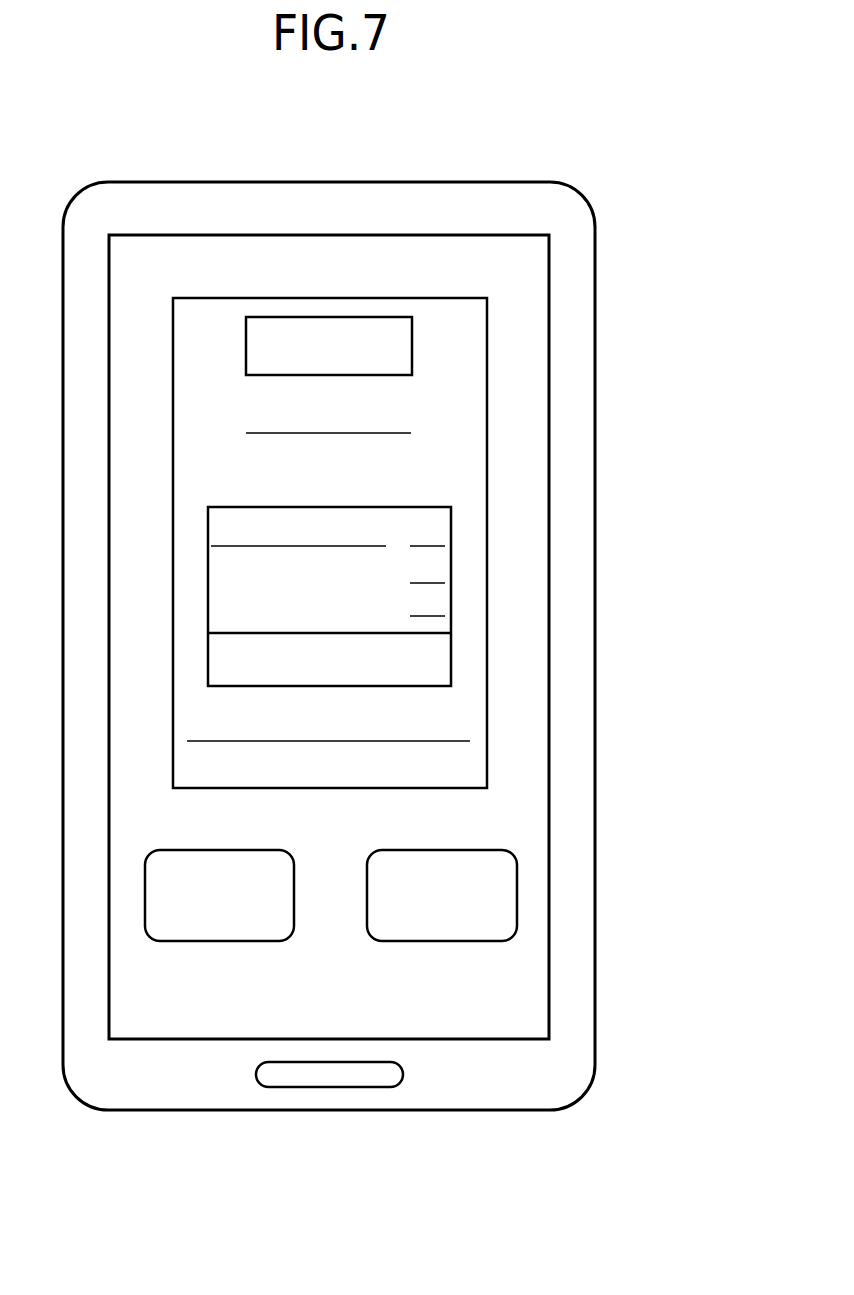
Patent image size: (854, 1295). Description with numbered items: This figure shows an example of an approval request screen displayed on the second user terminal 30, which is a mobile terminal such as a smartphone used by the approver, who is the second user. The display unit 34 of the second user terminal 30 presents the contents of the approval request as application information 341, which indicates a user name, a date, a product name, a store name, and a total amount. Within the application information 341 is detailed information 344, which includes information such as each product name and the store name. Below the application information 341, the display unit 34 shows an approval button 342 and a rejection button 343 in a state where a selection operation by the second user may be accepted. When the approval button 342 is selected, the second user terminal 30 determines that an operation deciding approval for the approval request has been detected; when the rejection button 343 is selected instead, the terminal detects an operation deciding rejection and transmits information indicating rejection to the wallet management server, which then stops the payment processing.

The second user terminal 30 is at (462, 182).
The display unit 34 is at (218, 235).
The application information 341 is at (487, 419).
The detailed information 344 is at (453, 580).
The approval button 342 is at (180, 941).
The rejection button 343 is at (467, 941).